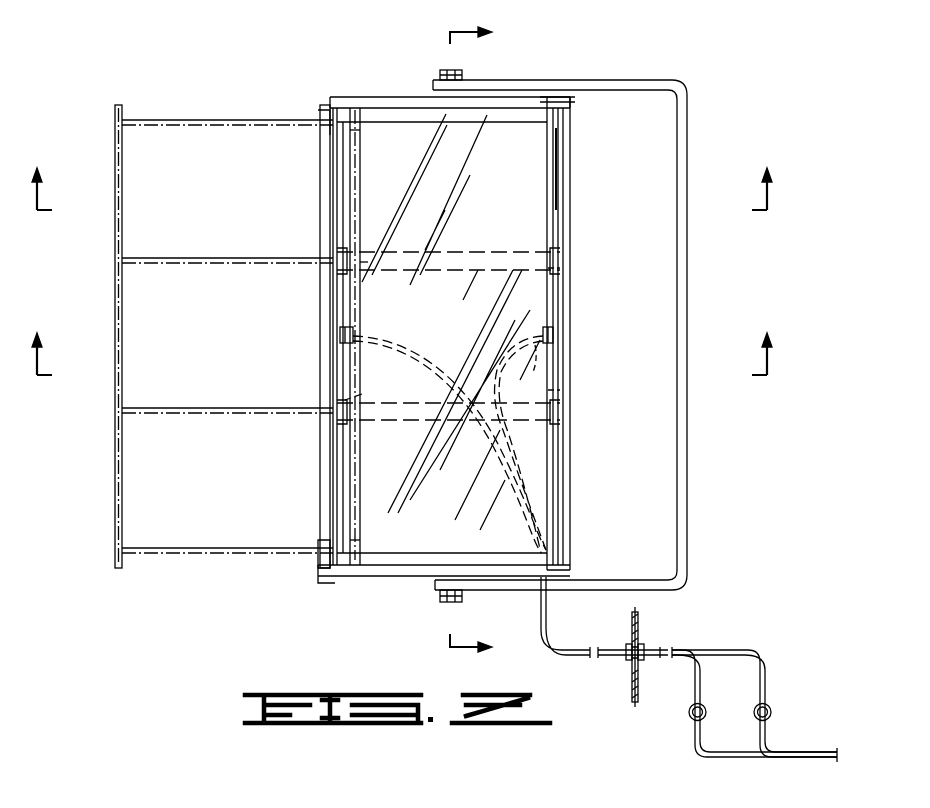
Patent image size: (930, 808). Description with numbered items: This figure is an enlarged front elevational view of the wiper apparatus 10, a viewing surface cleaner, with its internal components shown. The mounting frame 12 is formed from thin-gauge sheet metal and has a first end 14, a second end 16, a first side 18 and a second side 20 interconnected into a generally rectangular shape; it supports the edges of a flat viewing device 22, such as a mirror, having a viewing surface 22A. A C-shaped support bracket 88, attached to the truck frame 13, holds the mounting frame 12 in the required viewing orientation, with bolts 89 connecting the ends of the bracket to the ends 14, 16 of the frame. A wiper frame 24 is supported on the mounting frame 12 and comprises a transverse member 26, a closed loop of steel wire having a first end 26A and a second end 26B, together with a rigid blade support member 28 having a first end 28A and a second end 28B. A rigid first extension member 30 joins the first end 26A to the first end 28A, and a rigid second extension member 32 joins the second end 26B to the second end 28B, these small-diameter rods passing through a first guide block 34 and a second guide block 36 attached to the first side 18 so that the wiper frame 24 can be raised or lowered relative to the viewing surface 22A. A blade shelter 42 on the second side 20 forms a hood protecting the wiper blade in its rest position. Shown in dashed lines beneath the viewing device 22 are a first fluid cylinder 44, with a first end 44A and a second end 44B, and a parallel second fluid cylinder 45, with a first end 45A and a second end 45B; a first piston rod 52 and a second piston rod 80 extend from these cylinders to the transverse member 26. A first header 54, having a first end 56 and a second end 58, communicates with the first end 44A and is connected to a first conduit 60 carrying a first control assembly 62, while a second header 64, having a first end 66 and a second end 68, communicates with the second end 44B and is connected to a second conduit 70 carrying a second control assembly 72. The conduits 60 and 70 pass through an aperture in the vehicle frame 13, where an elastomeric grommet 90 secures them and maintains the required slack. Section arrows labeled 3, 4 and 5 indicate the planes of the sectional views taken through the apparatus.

The section line 3- 3 is at (401, 178).
The section line 4- 4 is at (401, 343).
The section line 5- 5 is at (480, 339).
The wiper apparatus 10 is at (302, 74).
The mounting frame 12 is at (372, 100).
The truck frame 13 is at (641, 626).
The first end 14 is at (376, 581).
The second end 16 is at (404, 96).
The first side 18 is at (334, 160).
The second side 20 is at (566, 186).
The viewing device 22 is at (520, 230).
The viewing surface 22A is at (432, 303).
The wiper frame 24 is at (322, 319).
The transverse member 26 is at (114, 240).
The first end 26A is at (318, 561).
The second end 26B is at (325, 131).
The blade support member 28 is at (355, 450).
The first end 28A is at (385, 554).
The second end 28B is at (355, 135).
The first extension member 30 is at (160, 549).
The second extension member 32 is at (213, 128).
The first guide block 34 is at (330, 579).
The second guide block 36 is at (320, 105).
The blade shelter 42 is at (559, 155).
The first fluid cylinder 44 is at (385, 413).
The first end 44A is at (336, 421).
The second end 44B is at (565, 413).
The second fluid cylinder 45 is at (470, 250).
The first end 45A is at (336, 252).
The second end 45B is at (560, 262).
The first piston rod 52 is at (160, 408).
The first header 54 is at (365, 331).
The first end 56 is at (362, 394).
The second end 58 is at (368, 268).
The first conduit 60 is at (420, 352).
The first control assembly 62 is at (689, 722).
The second header 64 is at (555, 321).
The first end 66 is at (565, 391).
The second end 68 is at (565, 269).
The second conduit 70 is at (764, 660).
The second control assembly 72 is at (773, 710).
The second piston rod 80 is at (160, 257).
The support bracket 88 is at (588, 80).
The bolts 89 is at (454, 69).
The elastomeric grommet 90 is at (625, 658).